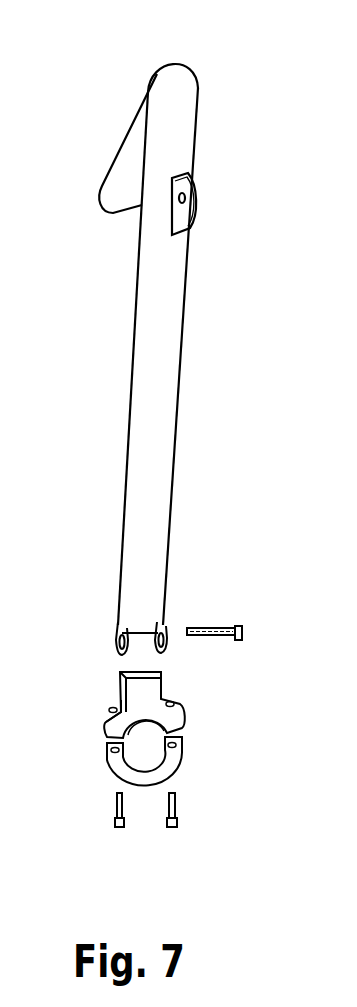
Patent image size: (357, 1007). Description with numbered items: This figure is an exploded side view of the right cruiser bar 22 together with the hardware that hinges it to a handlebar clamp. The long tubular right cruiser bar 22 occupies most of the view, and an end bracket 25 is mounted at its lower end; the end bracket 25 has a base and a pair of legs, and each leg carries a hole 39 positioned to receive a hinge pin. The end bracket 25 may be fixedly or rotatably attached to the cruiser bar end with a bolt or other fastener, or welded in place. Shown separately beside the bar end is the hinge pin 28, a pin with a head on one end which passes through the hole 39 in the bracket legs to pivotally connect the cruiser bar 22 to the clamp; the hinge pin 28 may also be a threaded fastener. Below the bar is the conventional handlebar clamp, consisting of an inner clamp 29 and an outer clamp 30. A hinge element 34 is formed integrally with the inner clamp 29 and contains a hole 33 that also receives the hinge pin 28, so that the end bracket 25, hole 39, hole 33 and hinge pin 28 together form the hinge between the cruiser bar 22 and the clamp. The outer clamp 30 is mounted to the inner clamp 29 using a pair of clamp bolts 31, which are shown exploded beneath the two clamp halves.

The right cruiser bar 22 is at (143, 452).
The end bracket 25 is at (120, 630).
The hole 39 is at (118, 637).
The hinge pin 28 is at (223, 632).
The inner clamp 29 is at (141, 705).
The outer clamp 30 is at (110, 763).
The clamp bolts 31 is at (172, 810).
The hole 33 is at (123, 692).
The hinge element 34 is at (160, 680).